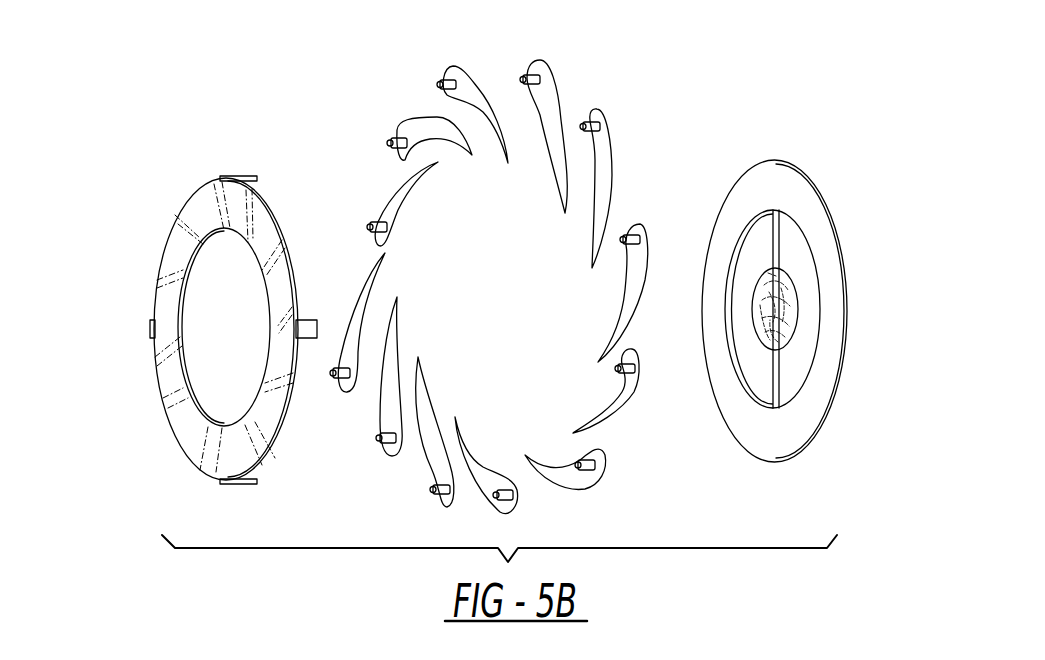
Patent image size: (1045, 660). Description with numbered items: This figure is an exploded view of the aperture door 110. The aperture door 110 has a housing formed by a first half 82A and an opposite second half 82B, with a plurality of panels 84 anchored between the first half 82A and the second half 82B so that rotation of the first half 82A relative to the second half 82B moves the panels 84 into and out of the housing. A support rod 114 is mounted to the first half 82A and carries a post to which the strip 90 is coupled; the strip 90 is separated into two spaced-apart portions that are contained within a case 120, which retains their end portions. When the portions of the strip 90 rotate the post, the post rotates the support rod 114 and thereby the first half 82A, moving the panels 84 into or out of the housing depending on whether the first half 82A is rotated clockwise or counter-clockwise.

The aperture door 110 is at (186, 64).
The second half 82B is at (202, 205).
The panels 84 is at (428, 130).
The first half 82A is at (747, 170).
The support rod 114 is at (773, 237).
The strip 90 is at (768, 310).
The case 120 is at (790, 342).